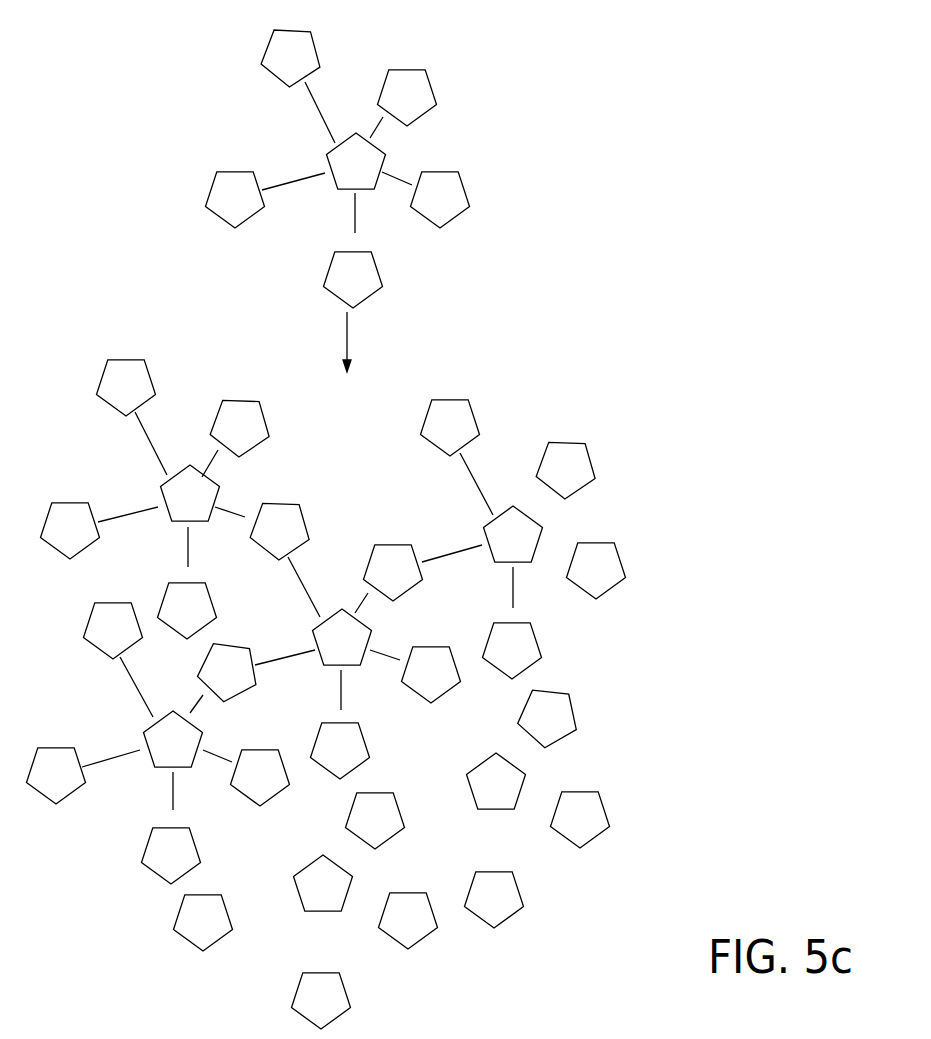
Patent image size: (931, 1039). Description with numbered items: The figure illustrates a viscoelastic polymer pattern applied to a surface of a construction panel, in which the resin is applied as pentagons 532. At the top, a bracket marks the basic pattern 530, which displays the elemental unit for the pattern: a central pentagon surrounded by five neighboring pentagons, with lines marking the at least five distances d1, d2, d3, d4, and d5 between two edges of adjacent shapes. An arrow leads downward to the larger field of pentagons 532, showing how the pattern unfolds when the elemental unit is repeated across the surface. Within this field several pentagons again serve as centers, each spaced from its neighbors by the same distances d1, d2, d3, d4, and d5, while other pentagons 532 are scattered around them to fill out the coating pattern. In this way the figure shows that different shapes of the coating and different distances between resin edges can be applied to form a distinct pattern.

The basic pattern 530 is at (493, 38).
The pentagons 532 is at (575, 458).
The first distance d1 is at (294, 421).
The second distance d2 is at (307, 476).
The third distance d3 is at (331, 501).
The fourth distance d4 is at (282, 464).
The fifth distance d5 is at (311, 399).